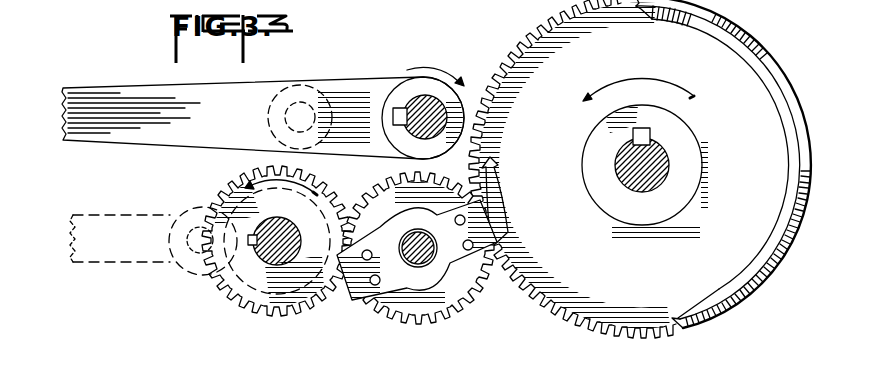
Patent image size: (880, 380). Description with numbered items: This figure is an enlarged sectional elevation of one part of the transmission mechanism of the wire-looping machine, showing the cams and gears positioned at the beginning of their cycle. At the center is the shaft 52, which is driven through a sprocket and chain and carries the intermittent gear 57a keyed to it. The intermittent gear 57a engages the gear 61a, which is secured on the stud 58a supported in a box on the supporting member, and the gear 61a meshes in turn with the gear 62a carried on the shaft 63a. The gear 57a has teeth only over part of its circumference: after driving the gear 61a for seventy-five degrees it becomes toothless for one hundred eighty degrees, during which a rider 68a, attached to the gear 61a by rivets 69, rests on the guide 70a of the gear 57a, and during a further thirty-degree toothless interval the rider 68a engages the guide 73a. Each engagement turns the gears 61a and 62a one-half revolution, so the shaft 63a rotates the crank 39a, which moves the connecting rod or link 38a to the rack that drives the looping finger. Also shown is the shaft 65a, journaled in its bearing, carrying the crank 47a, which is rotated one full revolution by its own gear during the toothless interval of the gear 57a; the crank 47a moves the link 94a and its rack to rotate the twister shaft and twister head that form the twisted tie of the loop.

The arm (dashed) 38a is at (117, 257).
The crank 39a is at (200, 275).
The crank 47a is at (340, 86).
The shaft 52 is at (663, 147).
The intermittent gear 57a is at (720, 283).
The stud 58a is at (420, 263).
The gear 61a is at (453, 295).
The gear 62a is at (298, 300).
The shaft 63a is at (267, 257).
The shaft 65a is at (437, 112).
The rider 68a is at (415, 228).
The rivets 69 is at (492, 246).
The guide 70a is at (717, 30).
The guide 73a is at (498, 199).
The link 94a is at (182, 135).